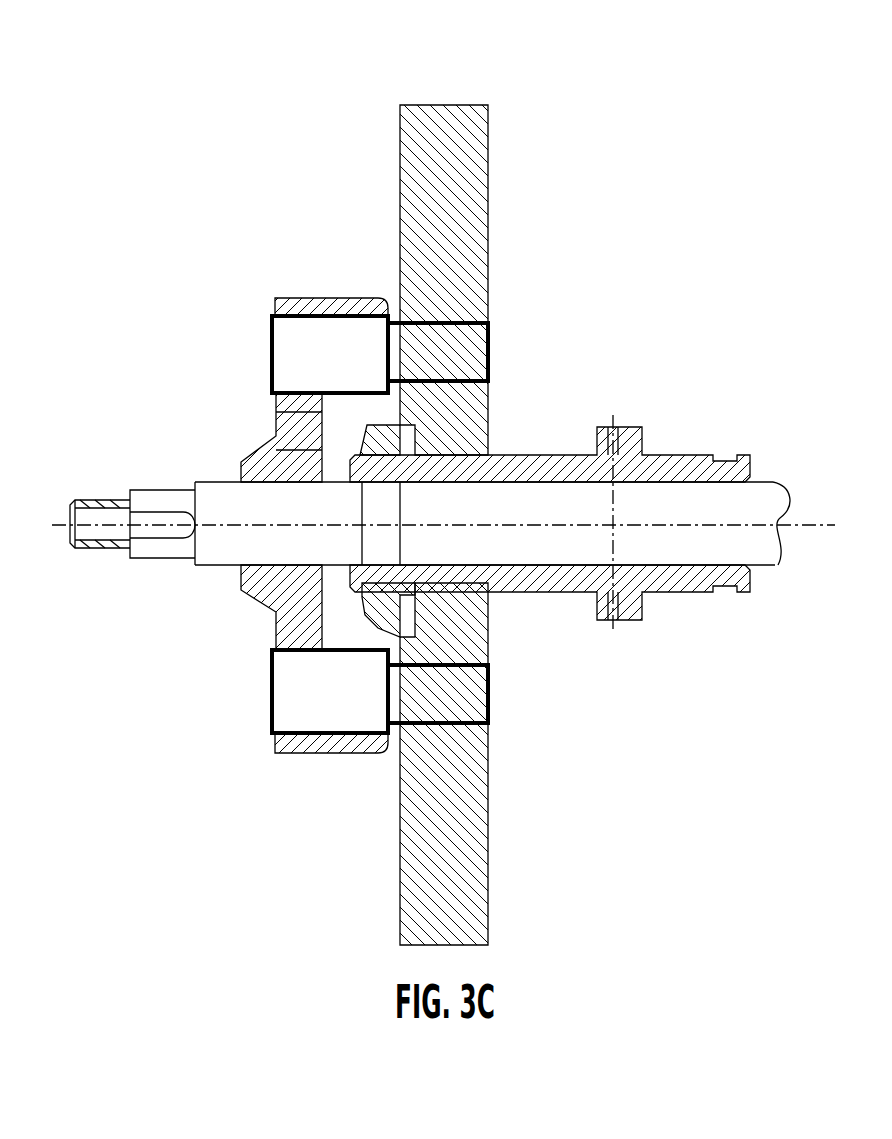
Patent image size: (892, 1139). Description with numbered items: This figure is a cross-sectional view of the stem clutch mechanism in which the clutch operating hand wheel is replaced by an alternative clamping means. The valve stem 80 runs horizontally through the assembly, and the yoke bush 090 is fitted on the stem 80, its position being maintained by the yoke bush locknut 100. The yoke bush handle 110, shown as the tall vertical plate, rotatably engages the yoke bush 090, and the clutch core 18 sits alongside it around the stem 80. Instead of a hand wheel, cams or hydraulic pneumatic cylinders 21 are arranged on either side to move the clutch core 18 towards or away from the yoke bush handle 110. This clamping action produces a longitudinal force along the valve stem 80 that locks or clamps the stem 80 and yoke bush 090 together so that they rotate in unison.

The yoke bush handle 110 is at (437, 135).
The hydraulic pneumatic cylinders 21 is at (358, 312).
The yoke bush 090 is at (525, 465).
The stem 80 is at (222, 503).
The clutch core 18 is at (275, 633).
The yoke bush locknut 100 is at (400, 640).